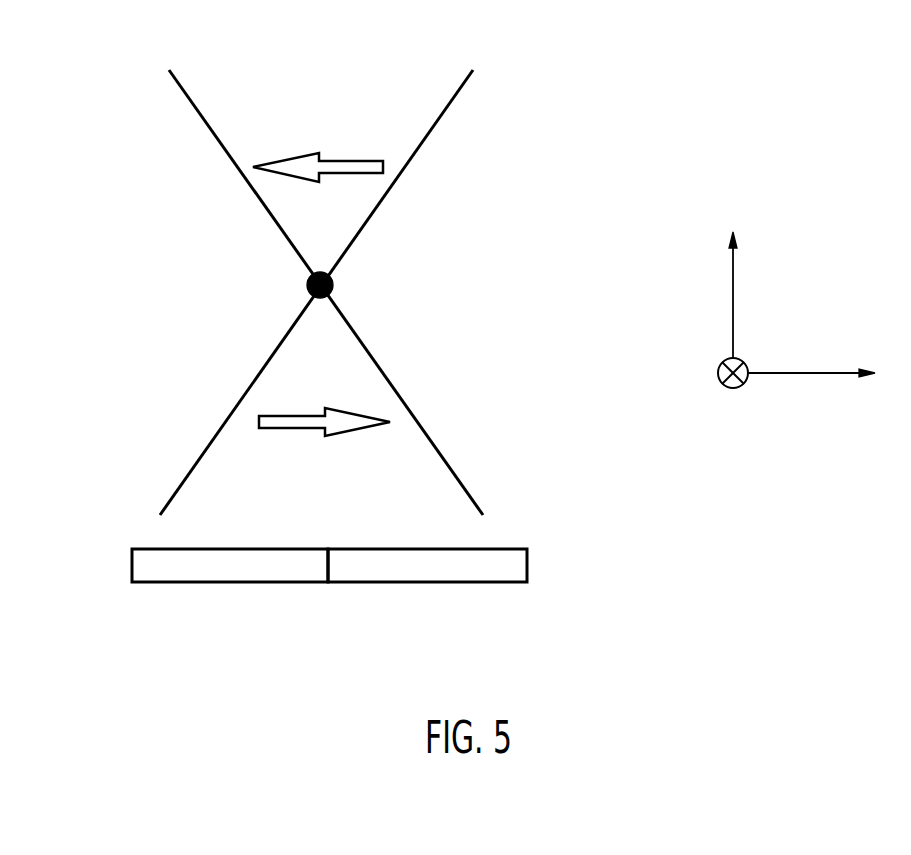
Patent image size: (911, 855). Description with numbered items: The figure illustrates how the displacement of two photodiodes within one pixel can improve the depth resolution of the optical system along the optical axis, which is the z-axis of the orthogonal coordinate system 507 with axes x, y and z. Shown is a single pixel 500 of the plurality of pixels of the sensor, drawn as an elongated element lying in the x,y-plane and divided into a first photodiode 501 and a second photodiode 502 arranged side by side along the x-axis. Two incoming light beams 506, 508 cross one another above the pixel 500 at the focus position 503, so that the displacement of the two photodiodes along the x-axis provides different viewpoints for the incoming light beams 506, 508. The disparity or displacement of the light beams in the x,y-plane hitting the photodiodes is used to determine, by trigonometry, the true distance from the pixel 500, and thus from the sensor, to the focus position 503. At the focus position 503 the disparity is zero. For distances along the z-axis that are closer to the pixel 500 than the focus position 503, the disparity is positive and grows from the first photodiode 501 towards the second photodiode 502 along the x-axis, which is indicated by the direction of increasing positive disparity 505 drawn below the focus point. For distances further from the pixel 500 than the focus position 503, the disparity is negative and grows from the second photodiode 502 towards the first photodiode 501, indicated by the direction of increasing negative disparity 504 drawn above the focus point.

The pixel 500 is at (331, 599).
The first photodiode 501 is at (140, 566).
The second photodiode 502 is at (469, 566).
The focus position 503 is at (333, 285).
The direction of increasing negative disparity 504 is at (339, 159).
The direction of increasing positive disparity 505 is at (293, 429).
The light beam 506 is at (455, 100).
The orthogonal coordinate system 507 is at (731, 396).
The light beam 508 is at (189, 101).